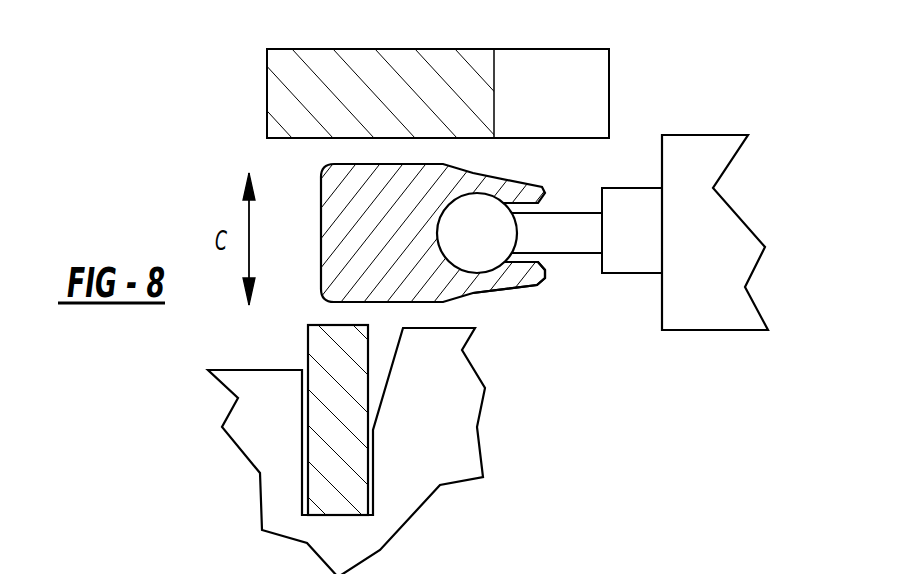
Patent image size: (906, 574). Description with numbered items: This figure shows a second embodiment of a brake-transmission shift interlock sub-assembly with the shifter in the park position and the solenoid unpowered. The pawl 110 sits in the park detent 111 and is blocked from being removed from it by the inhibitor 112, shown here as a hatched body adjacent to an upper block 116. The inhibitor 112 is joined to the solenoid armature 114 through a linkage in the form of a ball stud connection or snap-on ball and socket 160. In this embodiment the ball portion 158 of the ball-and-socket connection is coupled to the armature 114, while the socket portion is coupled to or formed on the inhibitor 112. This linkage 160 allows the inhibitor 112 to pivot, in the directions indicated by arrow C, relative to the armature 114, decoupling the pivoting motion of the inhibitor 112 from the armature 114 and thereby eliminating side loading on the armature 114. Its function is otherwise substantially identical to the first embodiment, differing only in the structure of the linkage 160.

The pawl 110 is at (328, 492).
The park detent 111 is at (302, 438).
The inhibitor 112 is at (373, 193).
The armature 114 is at (718, 302).
The upper block 116 is at (435, 49).
The ball portion 158 is at (480, 212).
The snap-on ball and socket 160 is at (523, 288).